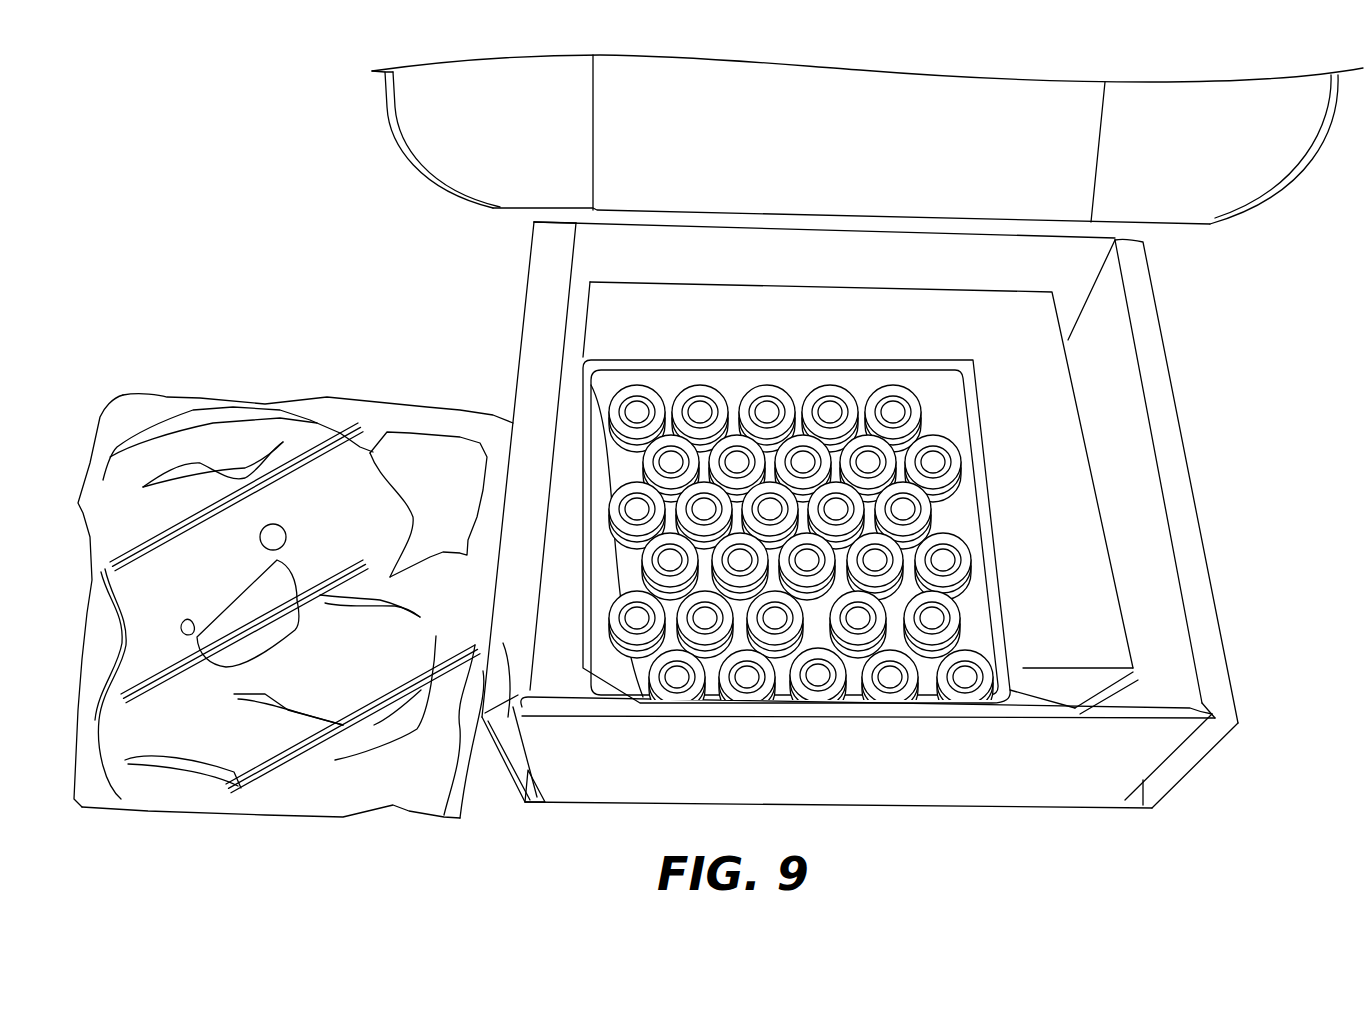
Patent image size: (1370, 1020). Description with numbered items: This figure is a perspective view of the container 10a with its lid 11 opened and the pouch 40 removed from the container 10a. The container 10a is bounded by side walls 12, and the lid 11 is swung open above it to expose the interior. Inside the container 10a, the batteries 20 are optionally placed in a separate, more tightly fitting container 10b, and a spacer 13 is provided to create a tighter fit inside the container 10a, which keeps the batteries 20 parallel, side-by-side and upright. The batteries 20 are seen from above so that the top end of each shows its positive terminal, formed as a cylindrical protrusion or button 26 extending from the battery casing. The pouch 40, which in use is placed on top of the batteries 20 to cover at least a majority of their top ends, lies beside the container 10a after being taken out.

The container 10a is at (907, 549).
The container 10b is at (948, 362).
The lid 11 is at (798, 130).
The side walls 12 is at (1187, 463).
The spacer 13 is at (1092, 598).
The batteries 20 is at (875, 706).
The cylindrical protrusion (button) 26 is at (818, 677).
The pouch 40 is at (318, 470).